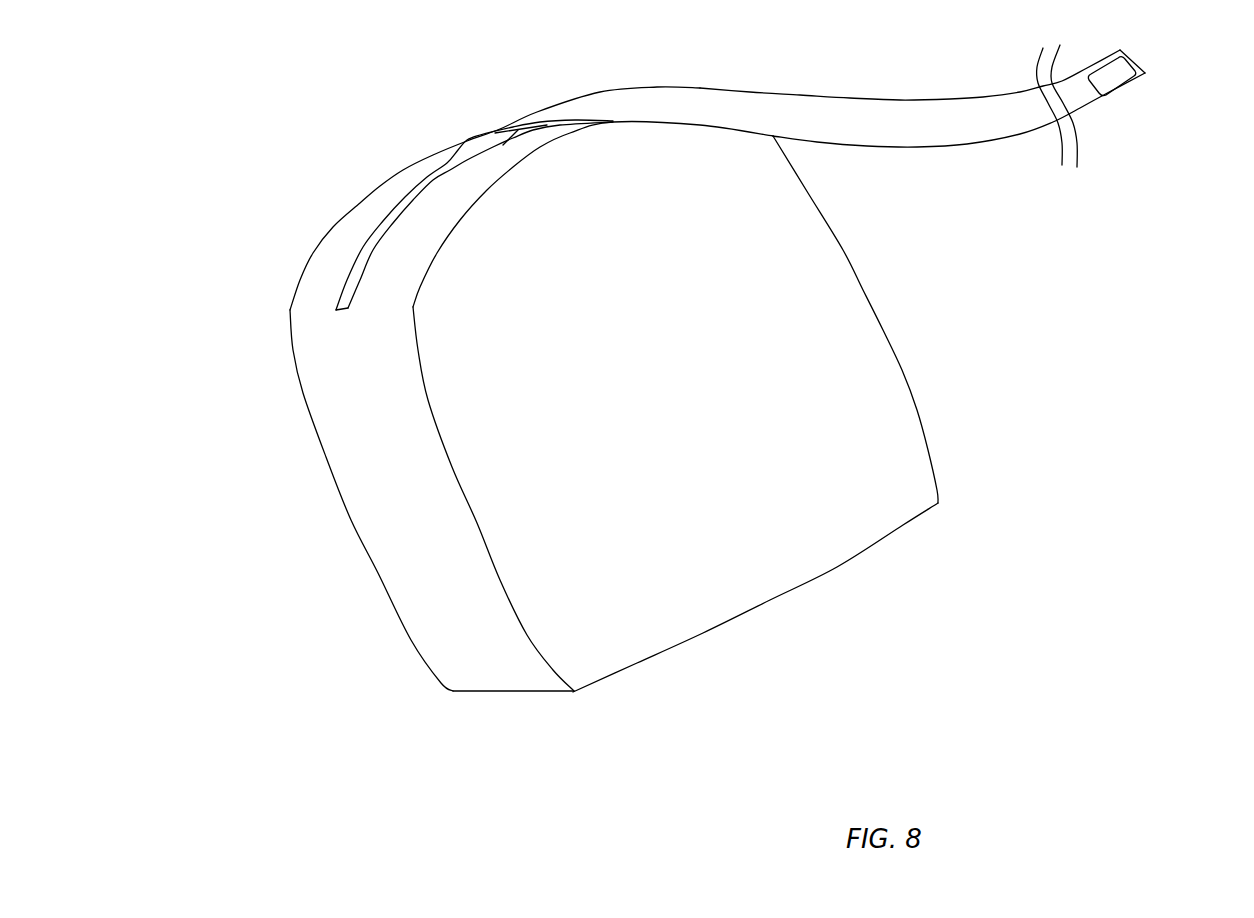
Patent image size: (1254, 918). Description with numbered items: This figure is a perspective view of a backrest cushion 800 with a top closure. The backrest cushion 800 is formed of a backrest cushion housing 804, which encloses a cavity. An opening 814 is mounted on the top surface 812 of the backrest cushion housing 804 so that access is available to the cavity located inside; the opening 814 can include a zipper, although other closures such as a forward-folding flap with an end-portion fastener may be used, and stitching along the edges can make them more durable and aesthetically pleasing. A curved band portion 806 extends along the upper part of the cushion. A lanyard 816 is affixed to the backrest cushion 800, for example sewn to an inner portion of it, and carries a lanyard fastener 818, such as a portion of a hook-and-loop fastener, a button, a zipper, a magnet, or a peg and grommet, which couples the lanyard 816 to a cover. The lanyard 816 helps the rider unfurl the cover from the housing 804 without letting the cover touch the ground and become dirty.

The backrest cushion 800 is at (268, 182).
The backrest cushion housing 804 is at (327, 463).
The headband portion 806 is at (413, 175).
The top surface 812 is at (340, 273).
The opening 814 is at (403, 225).
The lanyard 816 is at (963, 145).
The lanyard fastener 818 is at (1110, 75).